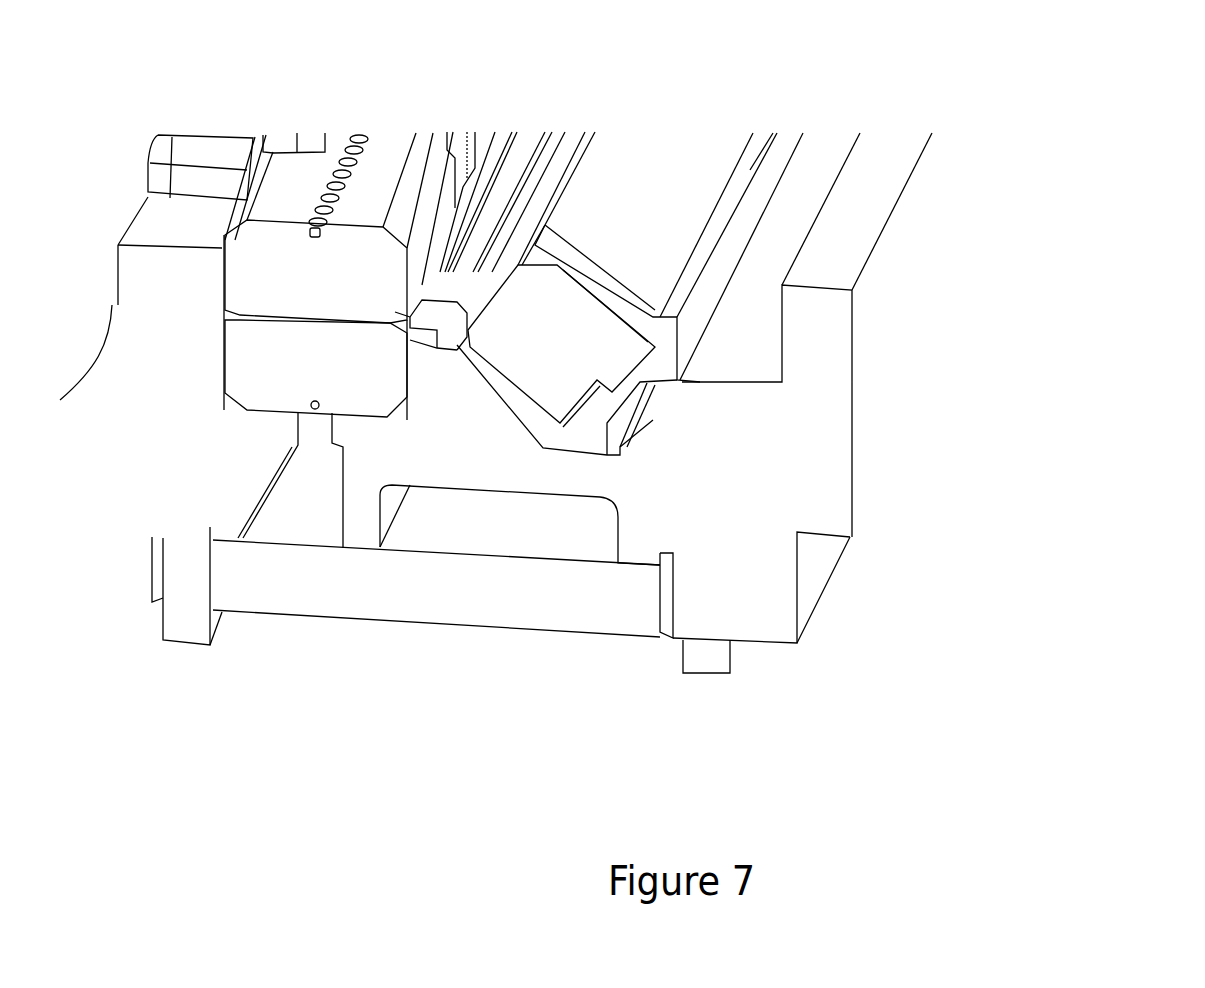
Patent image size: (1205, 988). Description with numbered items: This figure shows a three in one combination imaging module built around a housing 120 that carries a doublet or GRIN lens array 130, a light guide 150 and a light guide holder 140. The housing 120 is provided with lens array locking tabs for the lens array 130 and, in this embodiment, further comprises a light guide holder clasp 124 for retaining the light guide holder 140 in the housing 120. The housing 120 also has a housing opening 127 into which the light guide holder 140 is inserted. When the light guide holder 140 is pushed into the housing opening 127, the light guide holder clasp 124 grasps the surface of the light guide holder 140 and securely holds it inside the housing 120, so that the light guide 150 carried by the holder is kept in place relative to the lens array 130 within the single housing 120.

The housing 120 is at (620, 403).
The light guide holder clasp 124 is at (574, 529).
The housing opening 127 is at (798, 535).
The doublet or GRIN lens array 130 is at (415, 225).
The light guide holder 140 is at (612, 216).
The light guide 150 is at (754, 432).